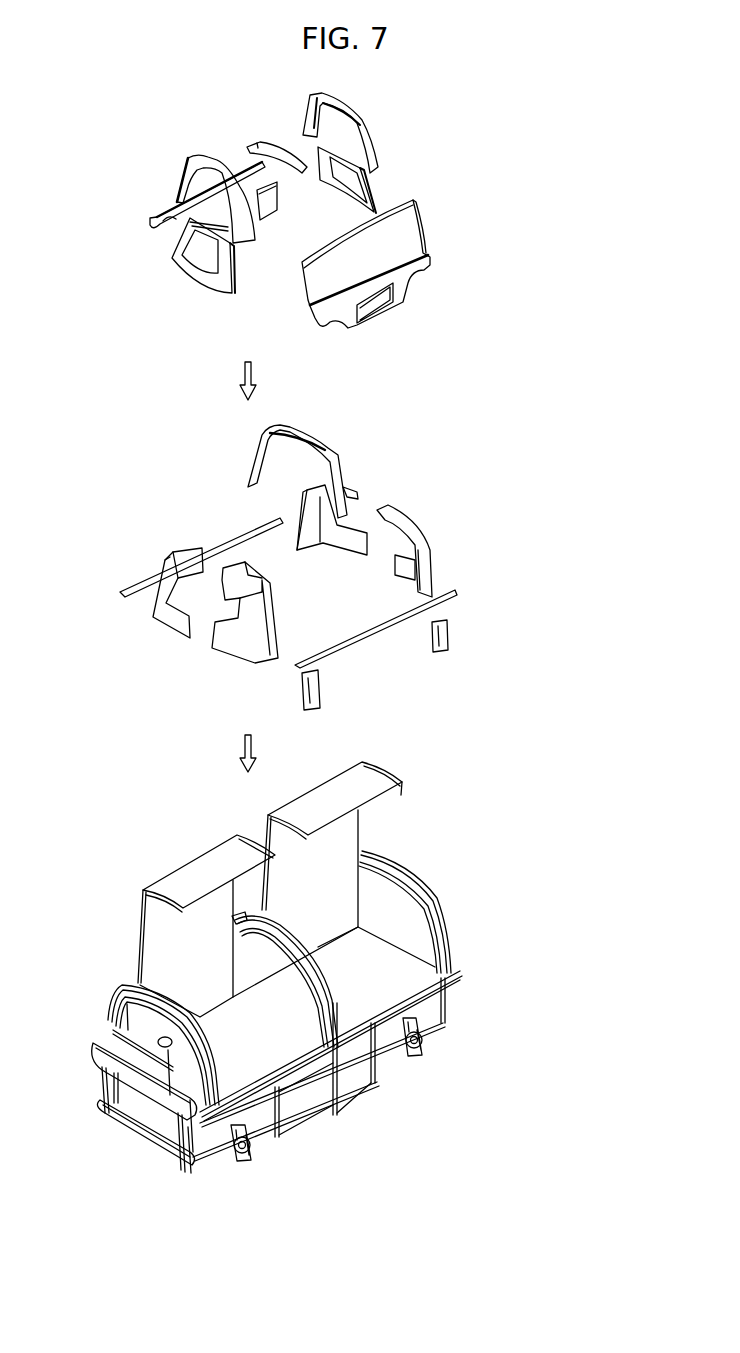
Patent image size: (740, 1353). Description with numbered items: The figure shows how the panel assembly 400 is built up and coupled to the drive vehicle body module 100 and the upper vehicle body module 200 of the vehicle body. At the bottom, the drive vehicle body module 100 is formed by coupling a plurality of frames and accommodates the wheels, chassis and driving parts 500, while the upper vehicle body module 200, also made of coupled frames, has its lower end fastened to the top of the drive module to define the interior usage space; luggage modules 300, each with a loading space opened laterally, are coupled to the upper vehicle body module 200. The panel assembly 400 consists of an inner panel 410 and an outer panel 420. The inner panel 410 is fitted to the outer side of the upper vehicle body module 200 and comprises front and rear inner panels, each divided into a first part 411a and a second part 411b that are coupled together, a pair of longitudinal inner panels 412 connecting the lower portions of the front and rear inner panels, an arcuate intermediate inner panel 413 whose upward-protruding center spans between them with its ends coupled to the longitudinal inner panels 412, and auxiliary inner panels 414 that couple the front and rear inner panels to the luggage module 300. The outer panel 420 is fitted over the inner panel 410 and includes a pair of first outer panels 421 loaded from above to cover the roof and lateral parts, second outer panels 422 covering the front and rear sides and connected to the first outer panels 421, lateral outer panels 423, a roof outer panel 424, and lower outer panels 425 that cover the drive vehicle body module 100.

The drive vehicle body module 100 is at (465, 1005).
The upper vehicle body module 200 is at (440, 890).
The luggage module 300 is at (368, 845).
The panel assembly 400 is at (556, 1155).
The inner panel 410 is at (175, 497).
The first part 411a is at (407, 517).
The second part 411b is at (355, 490).
The longitudinal inner panel 412 is at (230, 540).
The intermediate inner panel 413 is at (253, 453).
The auxiliary inner panel 414 is at (300, 688).
The outer panel 420 is at (150, 272).
The first outer panel 421 is at (210, 165).
The second outer panel 422 is at (207, 280).
The lateral outer panel 423 is at (270, 213).
The roof outer panel 424 is at (268, 148).
The lower outer panel 425 is at (155, 216).
The driving parts 500 is at (418, 1062).